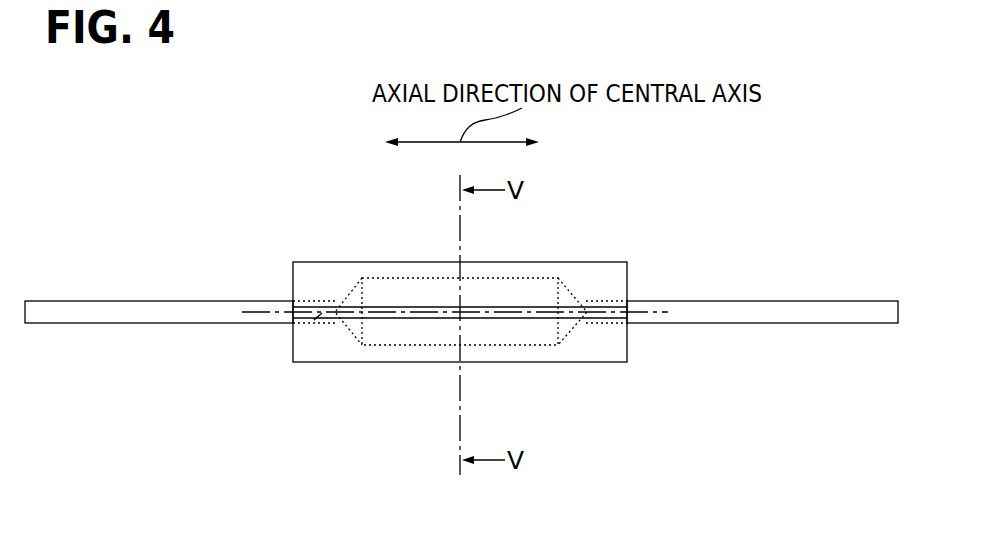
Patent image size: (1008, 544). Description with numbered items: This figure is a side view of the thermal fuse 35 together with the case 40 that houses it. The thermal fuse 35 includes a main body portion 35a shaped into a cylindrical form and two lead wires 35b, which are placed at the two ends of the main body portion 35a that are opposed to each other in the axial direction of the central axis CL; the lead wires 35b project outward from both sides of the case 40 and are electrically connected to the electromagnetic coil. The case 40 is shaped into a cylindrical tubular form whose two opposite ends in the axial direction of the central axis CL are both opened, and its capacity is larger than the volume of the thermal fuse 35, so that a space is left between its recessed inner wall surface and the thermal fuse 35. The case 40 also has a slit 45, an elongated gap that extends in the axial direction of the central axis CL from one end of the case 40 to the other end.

The thermal fuse 35 is at (388, 352).
The main body portion 35a is at (423, 354).
The lead wires 35b is at (149, 301).
The case 40 is at (347, 362).
The slit 45 is at (319, 317).
The central axis CL is at (655, 314).